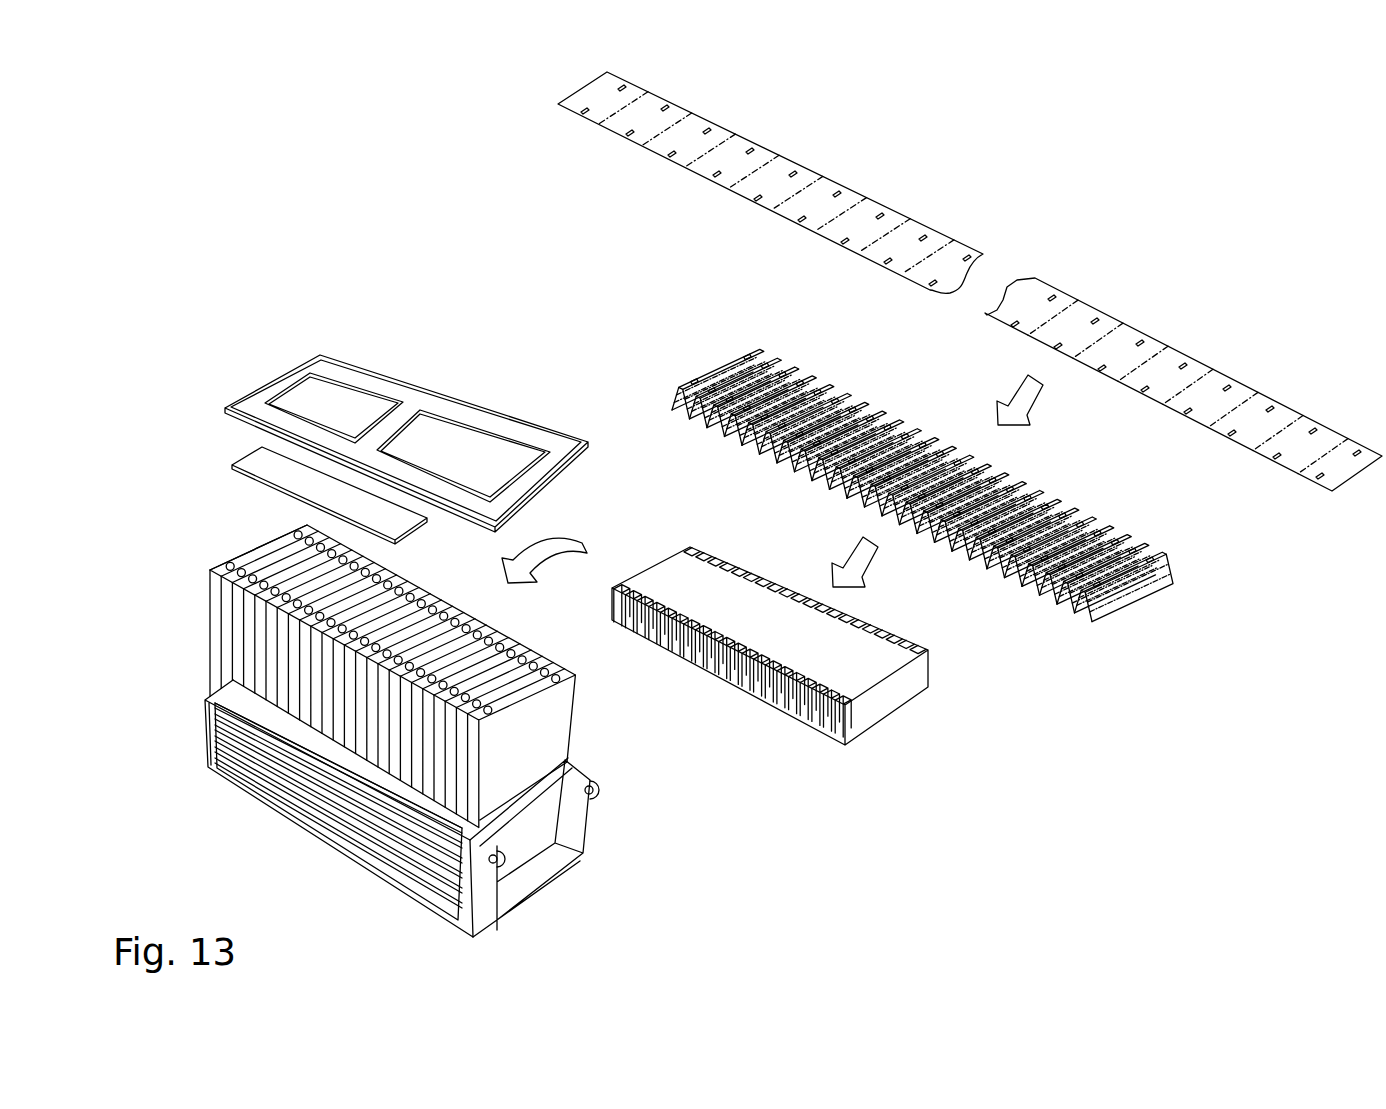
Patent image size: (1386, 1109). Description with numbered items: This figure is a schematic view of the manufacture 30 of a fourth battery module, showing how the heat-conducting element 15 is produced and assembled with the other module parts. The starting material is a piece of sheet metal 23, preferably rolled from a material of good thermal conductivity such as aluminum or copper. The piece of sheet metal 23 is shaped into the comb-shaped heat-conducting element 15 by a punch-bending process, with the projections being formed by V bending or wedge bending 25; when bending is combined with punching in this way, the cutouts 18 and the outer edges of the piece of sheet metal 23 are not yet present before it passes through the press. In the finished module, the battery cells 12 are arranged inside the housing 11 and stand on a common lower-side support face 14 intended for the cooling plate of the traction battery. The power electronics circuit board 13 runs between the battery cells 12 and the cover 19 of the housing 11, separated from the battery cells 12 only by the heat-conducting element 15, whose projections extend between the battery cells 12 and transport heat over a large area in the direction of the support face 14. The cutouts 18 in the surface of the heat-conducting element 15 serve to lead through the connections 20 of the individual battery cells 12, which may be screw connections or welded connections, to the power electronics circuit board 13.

The manufacture 30 is at (236, 150).
The housing 11 is at (210, 697).
The battery cells 12 is at (222, 638).
The power electronics circuit board 13 is at (253, 458).
The support face 14 is at (340, 865).
The heat-conducting element 15 is at (670, 567).
The cutouts 18 is at (763, 198).
The cover 19 is at (298, 373).
The connections 20 is at (297, 537).
The piece of sheet metal 23 is at (637, 140).
The wedge bending 25 is at (1015, 397).